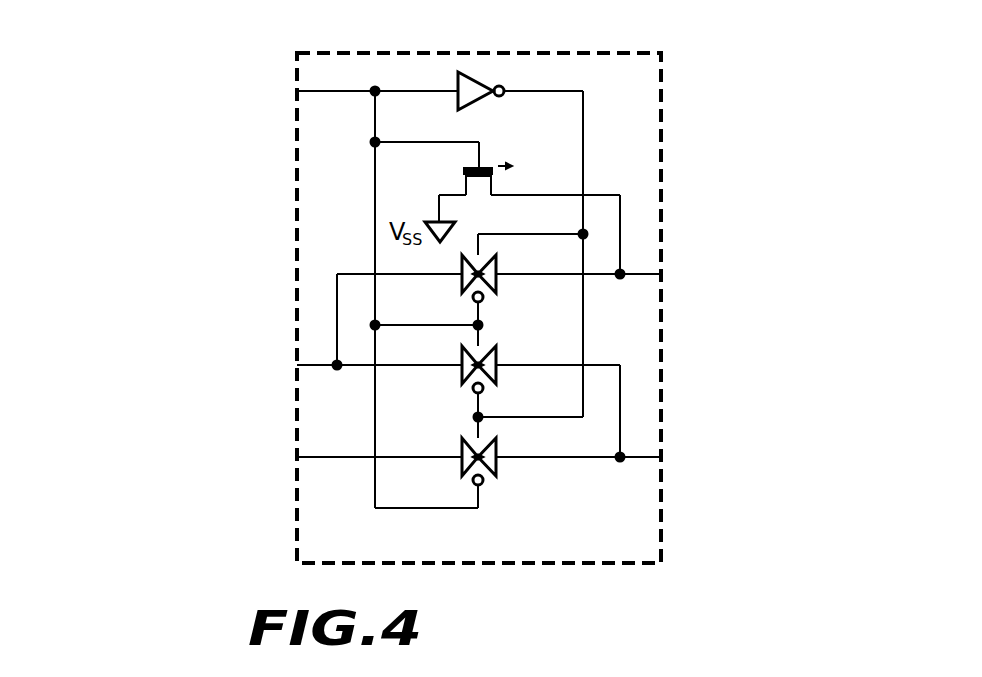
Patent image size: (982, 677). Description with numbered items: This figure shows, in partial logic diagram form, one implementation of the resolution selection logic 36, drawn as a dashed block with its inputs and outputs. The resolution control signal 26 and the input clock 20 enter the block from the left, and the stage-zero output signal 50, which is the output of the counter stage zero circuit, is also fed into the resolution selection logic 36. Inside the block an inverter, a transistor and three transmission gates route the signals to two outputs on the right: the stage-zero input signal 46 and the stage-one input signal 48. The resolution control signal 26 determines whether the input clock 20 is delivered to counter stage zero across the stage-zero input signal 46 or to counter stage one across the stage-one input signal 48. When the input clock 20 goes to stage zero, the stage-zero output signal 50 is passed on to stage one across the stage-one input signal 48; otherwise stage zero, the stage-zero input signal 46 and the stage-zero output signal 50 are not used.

The resolution control signal 26 is at (297, 91).
The input clock 20 is at (297, 365).
The STAGE 0 OUT signal 50 is at (297, 457).
The STAGE 0 IN signal 46 is at (661, 274).
The STAGE 1 IN signal 48 is at (661, 457).
The resolution selection logic 36 is at (336, 547).